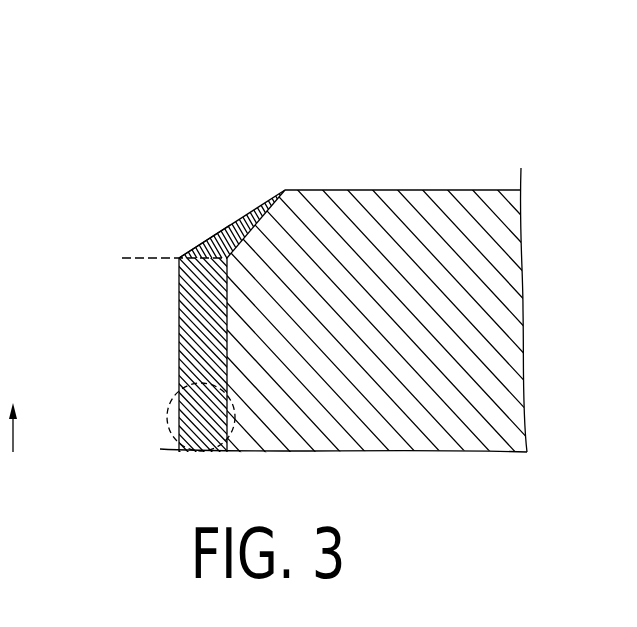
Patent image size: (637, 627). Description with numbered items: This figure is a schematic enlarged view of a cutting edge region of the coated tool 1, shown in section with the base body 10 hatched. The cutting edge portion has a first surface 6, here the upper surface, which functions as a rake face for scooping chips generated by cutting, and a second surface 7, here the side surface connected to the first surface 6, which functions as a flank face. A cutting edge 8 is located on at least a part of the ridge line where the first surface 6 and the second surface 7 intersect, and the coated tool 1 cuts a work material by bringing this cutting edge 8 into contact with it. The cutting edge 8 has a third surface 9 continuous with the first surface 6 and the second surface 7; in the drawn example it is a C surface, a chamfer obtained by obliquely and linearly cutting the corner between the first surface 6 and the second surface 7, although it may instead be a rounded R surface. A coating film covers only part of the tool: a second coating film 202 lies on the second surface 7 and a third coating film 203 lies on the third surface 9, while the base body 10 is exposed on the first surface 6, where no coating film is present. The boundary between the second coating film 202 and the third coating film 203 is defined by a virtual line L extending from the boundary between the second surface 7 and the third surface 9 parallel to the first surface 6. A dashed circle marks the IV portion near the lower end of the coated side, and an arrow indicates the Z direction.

The coated tool 1 is at (176, 92).
The first surface 6 is at (337, 190).
The second surface 7 is at (227, 293).
The cutting edge 8 is at (236, 221).
The third surface 9 is at (232, 230).
The base body 10 is at (427, 292).
The second coating film 202 is at (179, 357).
The third coating film 203 is at (212, 240).
The virtual line L is at (164, 260).
The IV portion IV is at (168, 410).
The Z axis Z is at (13, 416).